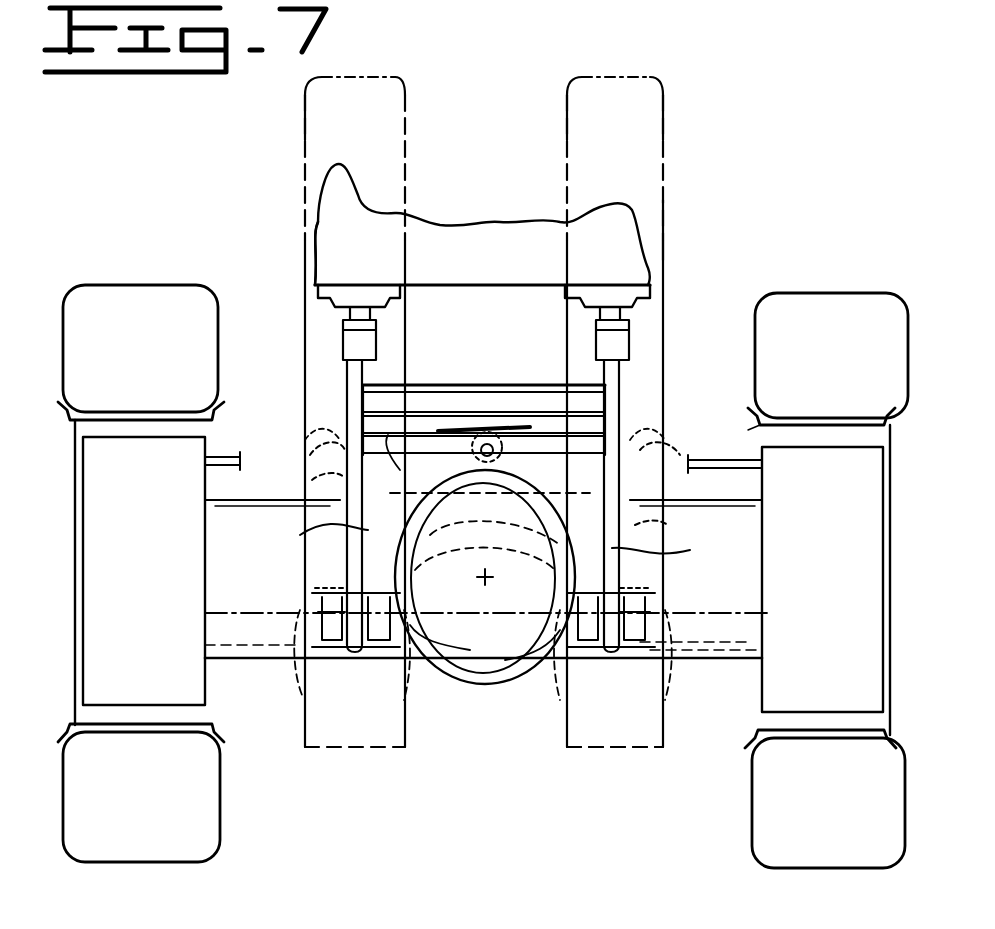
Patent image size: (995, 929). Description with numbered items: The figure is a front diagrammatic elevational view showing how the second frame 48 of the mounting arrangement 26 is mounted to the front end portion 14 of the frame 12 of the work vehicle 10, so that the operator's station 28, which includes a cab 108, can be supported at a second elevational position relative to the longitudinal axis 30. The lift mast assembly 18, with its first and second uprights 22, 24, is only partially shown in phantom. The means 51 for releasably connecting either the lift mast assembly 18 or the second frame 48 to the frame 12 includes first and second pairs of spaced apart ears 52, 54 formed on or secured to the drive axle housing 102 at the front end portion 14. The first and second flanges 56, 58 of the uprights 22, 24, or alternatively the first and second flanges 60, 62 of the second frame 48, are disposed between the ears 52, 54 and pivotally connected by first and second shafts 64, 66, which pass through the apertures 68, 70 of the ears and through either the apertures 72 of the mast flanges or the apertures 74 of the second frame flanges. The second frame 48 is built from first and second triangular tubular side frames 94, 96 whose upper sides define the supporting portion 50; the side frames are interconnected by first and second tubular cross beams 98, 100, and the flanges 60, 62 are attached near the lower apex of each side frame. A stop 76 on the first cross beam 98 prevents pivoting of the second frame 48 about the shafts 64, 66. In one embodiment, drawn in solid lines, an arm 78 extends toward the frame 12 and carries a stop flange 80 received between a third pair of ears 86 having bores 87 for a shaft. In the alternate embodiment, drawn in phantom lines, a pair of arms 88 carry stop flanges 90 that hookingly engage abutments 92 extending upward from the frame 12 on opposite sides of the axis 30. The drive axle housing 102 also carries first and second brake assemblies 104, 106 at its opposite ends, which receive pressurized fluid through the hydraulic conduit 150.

The work vehicle 10 is at (800, 108).
The frame 12 is at (485, 685).
The front end portion 14 is at (215, 660).
The lift mast assembly 18 is at (697, 92).
The first upright 22 is at (665, 230).
The second upright 24 is at (305, 110).
The mounting arrangement 26 is at (815, 249).
The operator's station 28 is at (316, 222).
The longitudinal axis 30 is at (483, 580).
The second frame 48 is at (752, 432).
The supporting portion 50 is at (343, 330).
The releasable connecting means 51 is at (618, 768).
The first pair of spaced apart ears 52 is at (597, 680).
The second pair of spaced apart ears 54 is at (345, 680).
The first flange 56 is at (655, 588).
The second flange 58 is at (315, 590).
The first flange of second frame 60 is at (650, 612).
The second flange of second frame 62 is at (318, 612).
The first shaft 64 is at (553, 640).
The second shaft 66 is at (440, 634).
The apertures 68 is at (558, 680).
The apertures 70 is at (302, 675).
The apertures 72 is at (495, 532).
The apertures 74 is at (485, 556).
The stop 76 is at (485, 402).
The arm 78 is at (440, 427).
The stop flange 80 is at (470, 455).
The third pair of spaced apart ears 86 is at (588, 395).
The bores 87 is at (500, 450).
The pair of spaced apart arms 88 is at (318, 452).
The stop flanges 90 is at (320, 480).
The abutments 92 is at (525, 500).
The first tubular side frame 94 is at (640, 548).
The second tubular side frame 96 is at (340, 520).
The first tubular cross beam 98 is at (388, 435).
The second tubular cross beam 100 is at (619, 385).
The drive axle housing 102 is at (763, 525).
The first brake assembly 104 is at (800, 583).
The second brake assembly 106 is at (112, 575).
The cab 108 is at (500, 225).
The hydraulic conduit 150 is at (232, 456).